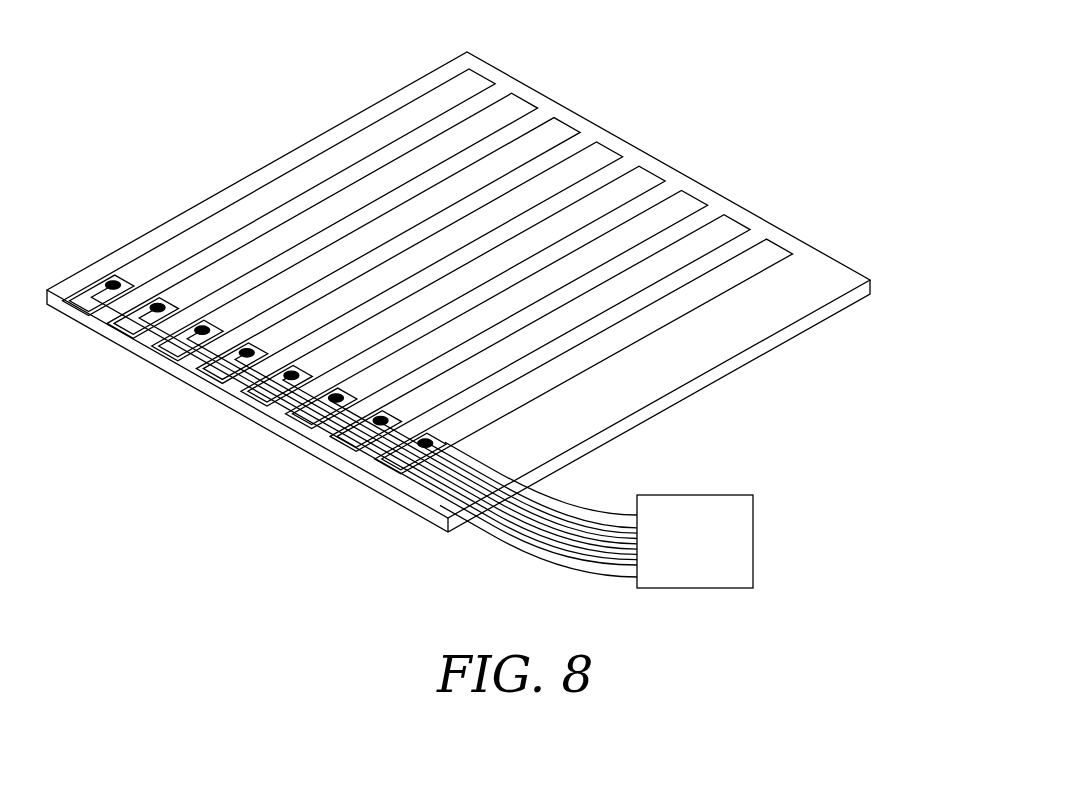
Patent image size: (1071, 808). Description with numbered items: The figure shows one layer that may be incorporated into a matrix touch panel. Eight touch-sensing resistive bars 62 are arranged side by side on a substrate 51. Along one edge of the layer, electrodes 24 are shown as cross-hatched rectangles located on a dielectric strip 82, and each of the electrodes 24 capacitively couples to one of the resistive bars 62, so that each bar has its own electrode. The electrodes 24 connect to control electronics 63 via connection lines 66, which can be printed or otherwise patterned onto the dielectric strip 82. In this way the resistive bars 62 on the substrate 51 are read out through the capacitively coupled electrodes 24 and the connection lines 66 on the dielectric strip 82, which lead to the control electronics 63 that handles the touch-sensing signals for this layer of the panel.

The electrodes 24 is at (425, 439).
The substrate 51 is at (735, 371).
The touch-sensing resistive bars 62 is at (483, 227).
The control electronics 63 is at (754, 545).
The connection lines 66 is at (513, 540).
The dielectric strip 82 is at (565, 575).